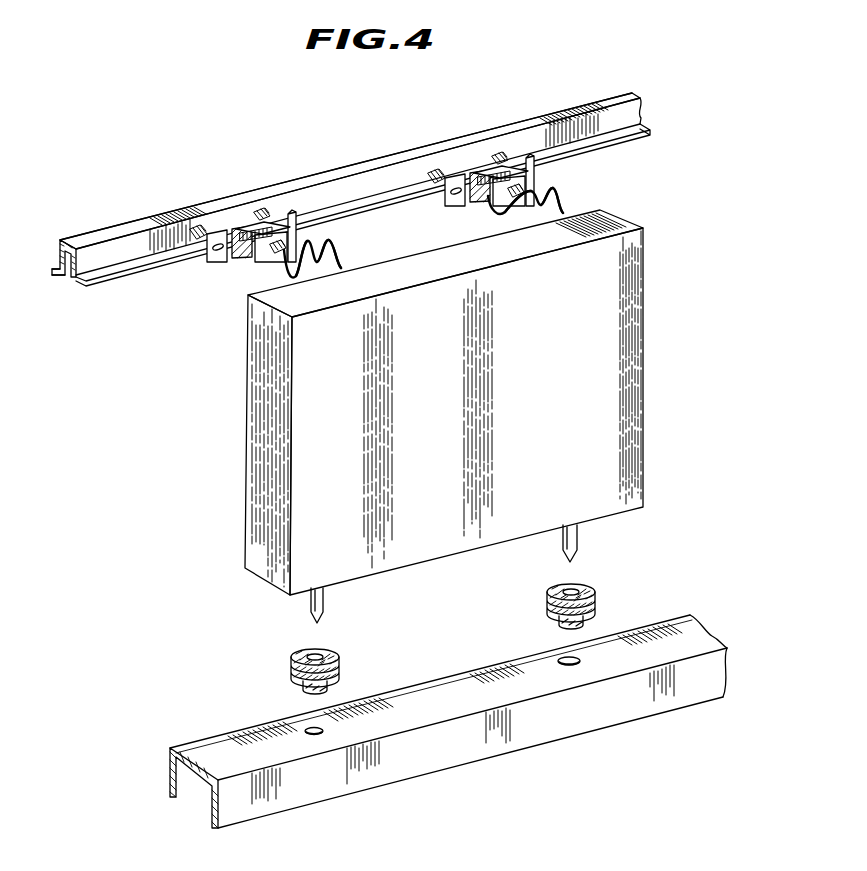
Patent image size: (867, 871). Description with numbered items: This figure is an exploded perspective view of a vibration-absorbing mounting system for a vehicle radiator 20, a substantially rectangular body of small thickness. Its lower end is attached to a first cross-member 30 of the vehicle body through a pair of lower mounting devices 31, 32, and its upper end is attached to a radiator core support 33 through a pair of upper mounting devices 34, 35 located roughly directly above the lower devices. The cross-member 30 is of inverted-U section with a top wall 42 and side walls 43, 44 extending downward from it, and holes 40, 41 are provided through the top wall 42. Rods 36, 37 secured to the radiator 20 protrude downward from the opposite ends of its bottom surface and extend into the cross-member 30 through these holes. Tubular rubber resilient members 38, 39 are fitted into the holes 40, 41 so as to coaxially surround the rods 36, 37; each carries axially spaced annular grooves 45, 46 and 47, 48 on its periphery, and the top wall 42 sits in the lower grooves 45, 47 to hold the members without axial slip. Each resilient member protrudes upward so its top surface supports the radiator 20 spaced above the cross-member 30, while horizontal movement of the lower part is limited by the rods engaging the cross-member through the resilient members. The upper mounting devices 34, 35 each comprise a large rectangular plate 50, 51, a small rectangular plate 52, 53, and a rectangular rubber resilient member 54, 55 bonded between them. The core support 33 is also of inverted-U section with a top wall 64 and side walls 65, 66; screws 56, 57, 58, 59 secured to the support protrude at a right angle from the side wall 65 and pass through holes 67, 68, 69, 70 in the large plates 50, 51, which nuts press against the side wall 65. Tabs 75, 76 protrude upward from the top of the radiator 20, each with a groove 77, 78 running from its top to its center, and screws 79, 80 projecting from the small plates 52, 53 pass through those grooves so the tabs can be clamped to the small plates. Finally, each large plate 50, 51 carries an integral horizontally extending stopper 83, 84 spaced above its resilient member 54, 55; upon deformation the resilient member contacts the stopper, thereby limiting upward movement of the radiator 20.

The radiator 20 is at (630, 322).
The first cross-member 30 is at (703, 670).
The lower mounting device 31 is at (287, 671).
The lower mounting device 32 is at (604, 599).
The radiator core support 33 is at (137, 223).
The upper mounting device 34 is at (187, 205).
The upper mounting device 35 is at (456, 122).
The rod 36 is at (310, 604).
The rod 37 is at (576, 537).
The tubular resilient member 38 is at (334, 648).
The tubular resilient member 39 is at (578, 587).
The hole 40 is at (310, 724).
The hole 41 is at (581, 660).
The top wall 42 is at (701, 630).
The side wall 43 is at (188, 788).
The side wall 44 is at (293, 792).
The annular groove 45 is at (338, 681).
The annular groove 46 is at (548, 608).
The annular groove 47 is at (341, 665).
The annular groove 48 is at (548, 592).
The large rectangular plate 50 is at (230, 258).
The large rectangular plate 51 is at (460, 200).
The small rectangular plate 52 is at (285, 263).
The small rectangular plate 53 is at (498, 206).
The rectangular resilient member 54 is at (246, 257).
The rectangular resilient member 55 is at (478, 202).
The screw 56 is at (195, 241).
The screw 57 is at (266, 208).
The screw 58 is at (436, 170).
The screw 59 is at (499, 152).
The top wall 64 is at (90, 235).
The side wall 65 is at (118, 257).
The side wall 66 is at (72, 262).
The hole 67 is at (218, 251).
The hole 68 is at (293, 214).
The hole 69 is at (446, 206).
The hole 70 is at (520, 157).
The tab 75 is at (343, 272).
The tab 76 is at (563, 203).
The groove 77 is at (339, 270).
The groove 78 is at (551, 202).
The screw 79 is at (326, 240).
The screw 80 is at (534, 188).
The stopper 83 is at (248, 225).
The stopper 84 is at (484, 168).